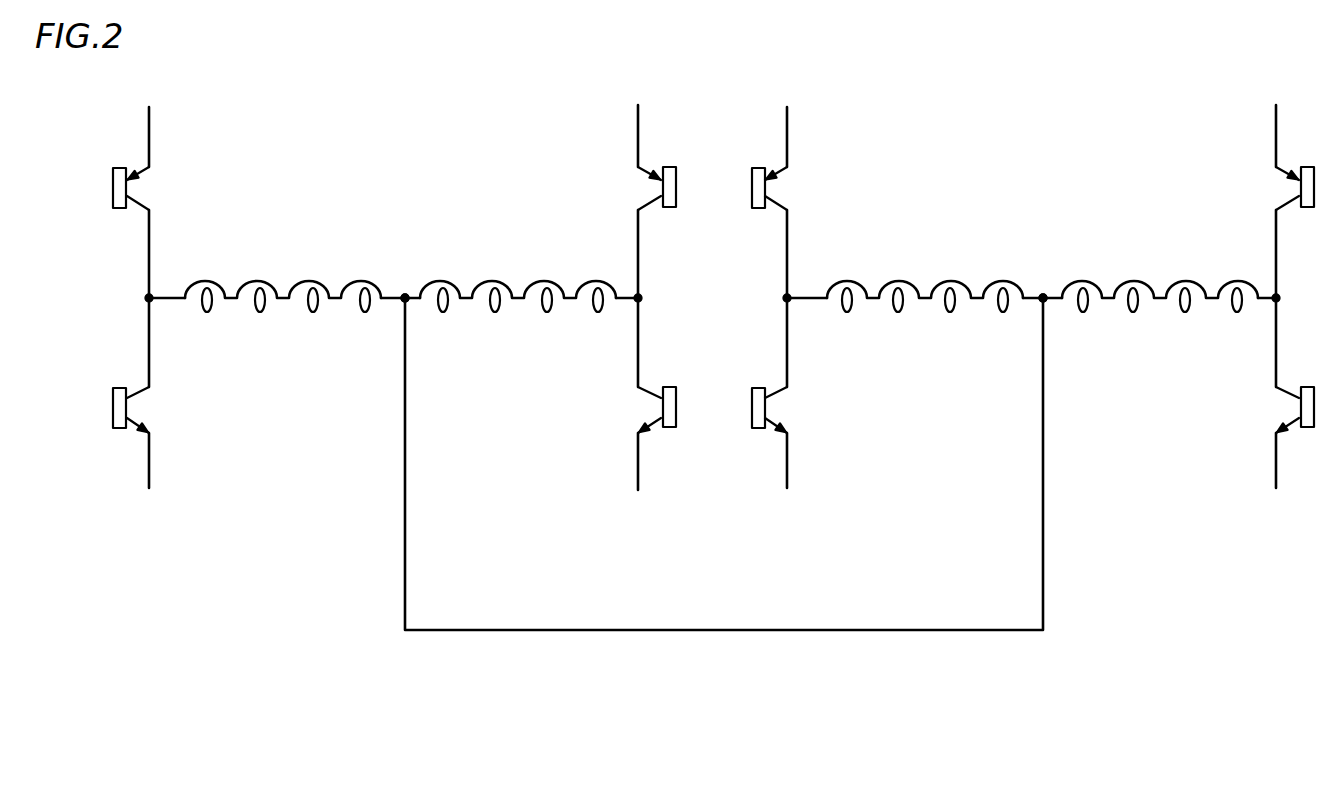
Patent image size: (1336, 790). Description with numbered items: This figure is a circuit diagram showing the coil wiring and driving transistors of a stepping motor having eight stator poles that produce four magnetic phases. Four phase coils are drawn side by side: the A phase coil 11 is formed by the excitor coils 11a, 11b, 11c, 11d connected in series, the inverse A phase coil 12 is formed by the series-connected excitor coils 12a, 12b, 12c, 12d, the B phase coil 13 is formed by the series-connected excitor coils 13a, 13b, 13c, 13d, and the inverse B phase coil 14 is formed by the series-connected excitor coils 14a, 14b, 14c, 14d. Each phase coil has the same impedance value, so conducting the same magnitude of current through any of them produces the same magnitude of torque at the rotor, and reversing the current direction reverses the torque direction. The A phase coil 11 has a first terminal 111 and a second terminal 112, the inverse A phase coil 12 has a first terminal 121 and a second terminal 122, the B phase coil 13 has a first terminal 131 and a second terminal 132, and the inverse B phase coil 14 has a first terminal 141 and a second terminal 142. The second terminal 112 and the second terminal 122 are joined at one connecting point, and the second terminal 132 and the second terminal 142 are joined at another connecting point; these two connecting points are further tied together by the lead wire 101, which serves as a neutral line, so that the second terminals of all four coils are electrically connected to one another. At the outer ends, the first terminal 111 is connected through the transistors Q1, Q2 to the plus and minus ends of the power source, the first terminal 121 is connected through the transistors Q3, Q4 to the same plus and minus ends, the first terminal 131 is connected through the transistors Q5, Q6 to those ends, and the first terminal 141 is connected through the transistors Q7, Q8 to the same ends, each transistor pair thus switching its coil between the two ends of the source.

The A phase coil 11 is at (188, 268).
The inverse A phase coil 12 is at (620, 268).
The B phase coil 13 is at (1027, 268).
The inverse B phase coil 14 is at (1261, 268).
The excitor coil 11a is at (207, 313).
The excitor coil 11b is at (260, 313).
The excitor coil 11c is at (313, 313).
The excitor coil 11d is at (365, 313).
The excitor coil 12a is at (443, 312).
The excitor coil 12b is at (495, 312).
The excitor coil 12c is at (546, 312).
The excitor coil 12d is at (598, 312).
The excitor coil 13a is at (847, 312).
The excitor coil 13b is at (898, 312).
The excitor coil 13c is at (950, 312).
The excitor coil 13d is at (1003, 312).
The excitor coil 14a is at (1083, 312).
The excitor coil 14b is at (1133, 312).
The excitor coil 14c is at (1185, 312).
The excitor coil 14d is at (1237, 312).
The first terminal 111 is at (184, 296).
The second terminal 112 is at (392, 295).
The first terminal 121 is at (625, 290).
The second terminal 122 is at (420, 290).
The first terminal 131 is at (820, 292).
The second terminal 132 is at (1032, 290).
The first terminal 141 is at (1263, 290).
The second terminal 142 is at (1060, 290).
The lead wire 101 is at (713, 632).
The transistor Q1 is at (112, 188).
The transistor Q2 is at (112, 410).
The transistor Q3 is at (658, 200).
The transistor Q4 is at (658, 422).
The transistor Q5 is at (767, 201).
The transistor Q6 is at (767, 422).
The transistor Q7 is at (1296, 201).
The transistor Q8 is at (1296, 421).